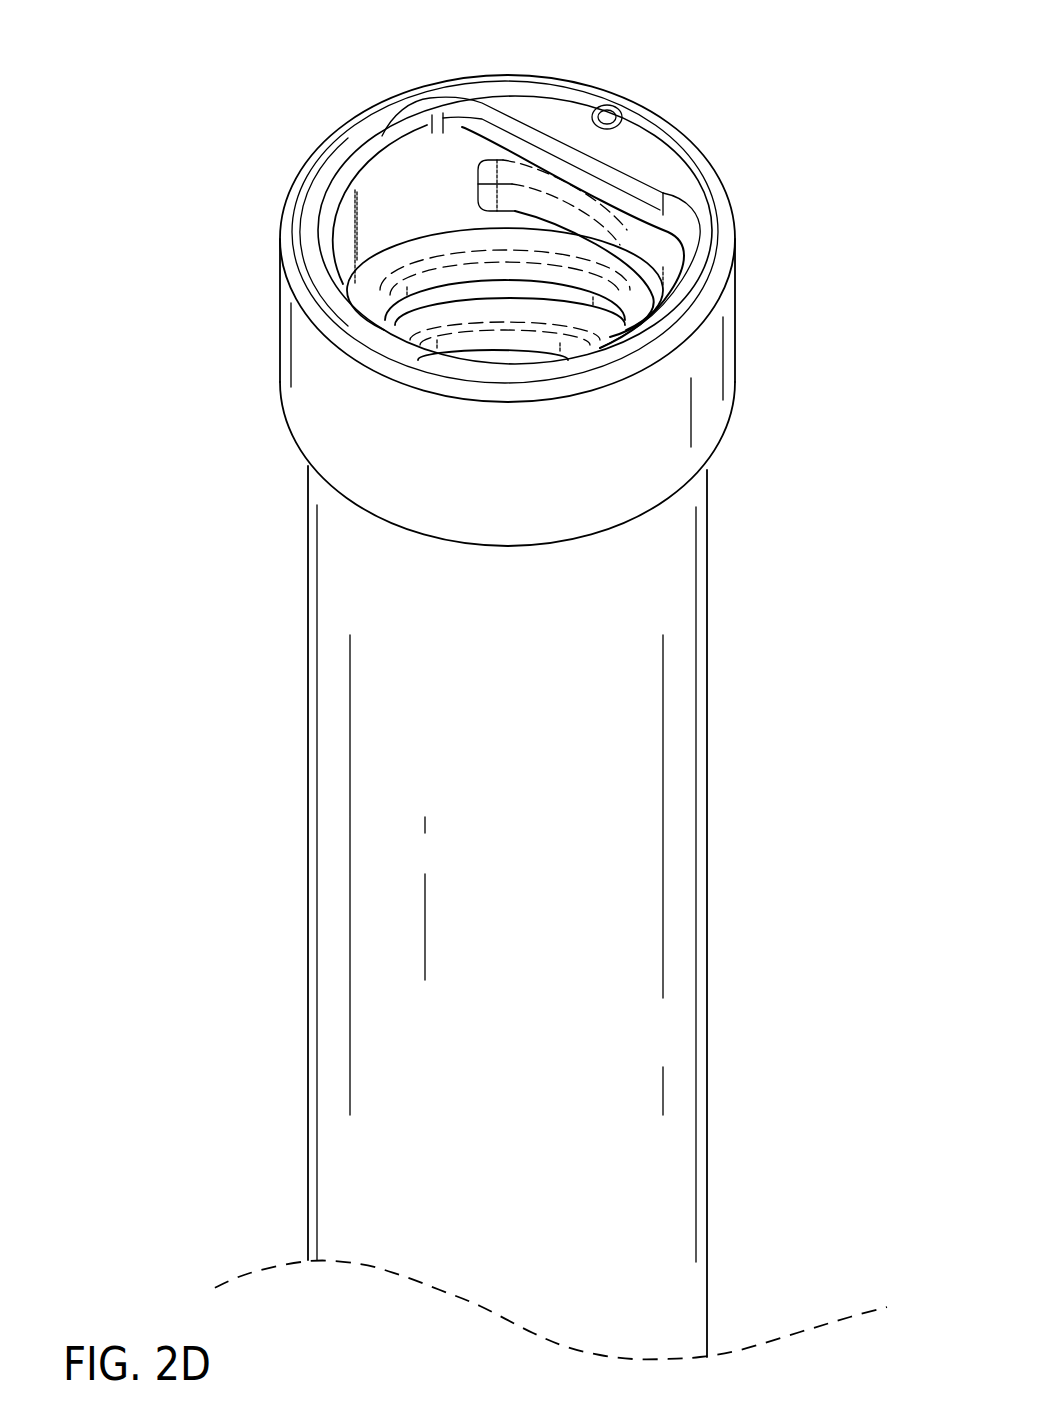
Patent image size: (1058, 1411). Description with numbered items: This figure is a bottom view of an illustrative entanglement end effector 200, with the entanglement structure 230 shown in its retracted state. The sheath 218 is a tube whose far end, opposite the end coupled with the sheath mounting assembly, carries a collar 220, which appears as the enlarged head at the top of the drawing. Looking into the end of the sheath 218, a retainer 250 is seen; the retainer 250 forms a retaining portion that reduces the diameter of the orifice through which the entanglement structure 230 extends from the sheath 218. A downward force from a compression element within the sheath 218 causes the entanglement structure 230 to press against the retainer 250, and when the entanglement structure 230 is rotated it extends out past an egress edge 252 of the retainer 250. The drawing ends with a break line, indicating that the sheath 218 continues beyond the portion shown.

The entanglement end effector 200 is at (118, 88).
The sheath 218 is at (706, 723).
The collar 220 is at (732, 347).
The entanglement structure 230 is at (497, 193).
The retainer 250 is at (643, 147).
The egress edge 252 is at (418, 130).